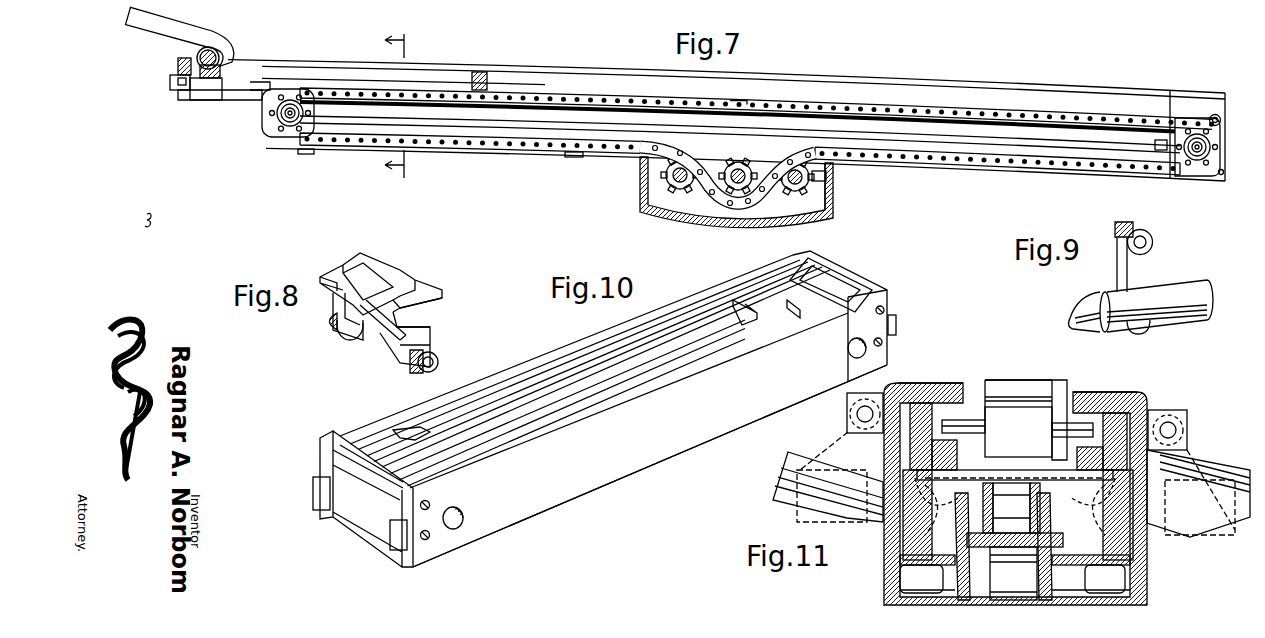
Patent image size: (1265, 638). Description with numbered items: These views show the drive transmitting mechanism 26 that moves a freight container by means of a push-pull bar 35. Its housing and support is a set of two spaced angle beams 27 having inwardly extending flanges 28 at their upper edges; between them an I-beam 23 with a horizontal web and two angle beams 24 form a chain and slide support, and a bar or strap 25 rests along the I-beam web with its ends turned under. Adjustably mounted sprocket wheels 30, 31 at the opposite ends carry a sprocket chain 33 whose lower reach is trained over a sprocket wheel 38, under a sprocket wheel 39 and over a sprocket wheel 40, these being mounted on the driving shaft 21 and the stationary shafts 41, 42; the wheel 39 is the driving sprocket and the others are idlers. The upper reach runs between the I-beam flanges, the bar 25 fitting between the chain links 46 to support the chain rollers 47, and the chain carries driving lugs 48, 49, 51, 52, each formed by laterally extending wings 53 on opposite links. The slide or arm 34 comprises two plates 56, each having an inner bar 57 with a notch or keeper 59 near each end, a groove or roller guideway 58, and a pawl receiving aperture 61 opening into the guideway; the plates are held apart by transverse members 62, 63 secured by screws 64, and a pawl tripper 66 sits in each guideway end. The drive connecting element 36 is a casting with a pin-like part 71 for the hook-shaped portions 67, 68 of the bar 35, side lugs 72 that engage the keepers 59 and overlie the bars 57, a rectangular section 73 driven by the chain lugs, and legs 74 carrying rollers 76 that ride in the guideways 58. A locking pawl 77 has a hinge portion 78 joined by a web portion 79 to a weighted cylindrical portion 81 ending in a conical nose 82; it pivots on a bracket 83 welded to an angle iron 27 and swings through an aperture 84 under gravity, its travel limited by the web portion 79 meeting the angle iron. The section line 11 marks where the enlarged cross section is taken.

In FIG. 7, the section line 11 is at (400, 105).
In FIG. 7, the driving shaft 21 is at (666, 208).
In FIG. 7, the I-beam 23 is at (975, 162).
In FIG. 11, the I-beam 23 is at (1105, 579).
In FIG. 7, the angle beams 24 is at (1010, 160).
In FIG. 11, the angle beams 24 is at (947, 592).
In FIG. 7, the bar or strap 25 is at (1161, 151).
In FIG. 11, the bar or strap 25 is at (1013, 573).
In FIG. 7, the drive transmitting mechanism 26 is at (953, 81).
In FIG. 7, the angle beams 27 is at (1218, 106).
In FIG. 11, the angle beams 27 is at (1145, 395).
In FIG. 7, the inwardly extending flanges 28 is at (1110, 90).
In FIG. 11, the inwardly extending flanges 28 is at (950, 385).
In FIG. 7, the sprocket wheel 30 is at (270, 138).
In FIG. 7, the sprocket wheel 31 is at (1196, 172).
In FIG. 7, the sprocket chain 33 is at (918, 170).
In FIG. 7, the slide or arm 34 is at (241, 100).
In FIG. 10, the slide or arm 34 is at (600, 475).
In FIG. 7, the push-pull bar 35 is at (150, 23).
In FIG. 7, the drive connecting element 36 is at (208, 107).
In FIG. 8, the drive connecting element 36 is at (424, 266).
In FIG. 11, the drive connecting element 36 is at (1021, 373).
In FIG. 7, the sprocket wheel 38 is at (660, 177).
In FIG. 7, the sprocket wheel 39 is at (730, 181).
In FIG. 7, the sprocket wheel 40 is at (833, 200).
In FIG. 7, the shaft 41 is at (775, 181).
In FIG. 7, the shaft 42 is at (812, 174).
In FIG. 11, the chain links 46 is at (1040, 508).
In FIG. 11, the chain rollers 47 is at (1013, 490).
In FIG. 7, the driving lug 48 is at (575, 158).
In FIG. 7, the driving lug 49 is at (308, 154).
In FIG. 7, the driving lug 51 is at (476, 72).
In FIG. 7, the driving lug 52 is at (748, 100).
In FIG. 11, the laterally extending wings 53 is at (950, 470).
In FIG. 10, the plates or bars 56 is at (342, 420).
In FIG. 7, the bar 57 is at (331, 76).
In FIG. 10, the bar 57 is at (553, 376).
In FIG. 11, the bar 57 is at (944, 440).
In FIG. 7, the groove or roller guideway 58 is at (272, 76).
In FIG. 10, the groove or roller guideway 58 is at (664, 364).
In FIG. 11, the groove or roller guideway 58 is at (1147, 476).
In FIG. 7, the notch or keeper 59 is at (260, 84).
In FIG. 10, the notch or keeper 59 is at (408, 430).
In FIG. 7, the pawl receiving aperture 61 is at (181, 92).
In FIG. 10, the pawl receiving aperture 61 is at (463, 517).
In FIG. 10, the transverse member 62 is at (378, 507).
In FIG. 10, the transverse member 63 is at (832, 284).
In FIG. 10, the screw 64 is at (430, 504).
In FIG. 7, the pawl tripper 66 is at (170, 84).
In FIG. 10, the pawl tripper 66 is at (313, 496).
In FIG. 7, the hook-shaped portion 67 is at (218, 61).
In FIG. 7, the hook-shaped portion 68 is at (178, 63).
In FIG. 8, the pin-like part 71 is at (378, 264).
In FIG. 11, the pin-like part 71 is at (1040, 386).
In FIG. 8, the side lugs 72 is at (334, 270).
In FIG. 11, the side lugs 72 is at (967, 418).
In FIG. 8, the rectangular section 73 is at (380, 333).
In FIG. 11, the rectangular section 73 is at (996, 465).
In FIG. 8, the legs 74 is at (350, 336).
In FIG. 11, the legs 74 is at (960, 522).
In FIG. 8, the rollers 76 is at (325, 323).
In FIG. 11, the rollers 76 is at (1157, 555).
In FIG. 9, the locking pawl 77 is at (1213, 282).
In FIG. 11, the locking pawl 77 is at (772, 481).
In FIG. 9, the hinge portion 78 is at (1115, 228).
In FIG. 9, the web portion 79 is at (1158, 260).
In FIG. 11, the web portion 79 is at (792, 447).
In FIG. 9, the cylindrical portion 81 is at (1104, 292).
In FIG. 7, the conically shaped nose 82 is at (1223, 168).
In FIG. 9, the conically shaped nose 82 is at (1074, 320).
In FIG. 11, the bracket 83 is at (850, 412).
In FIG. 7, the opening or aperture 84 is at (1213, 114).
In FIG. 11, the opening or aperture 84 is at (903, 512).